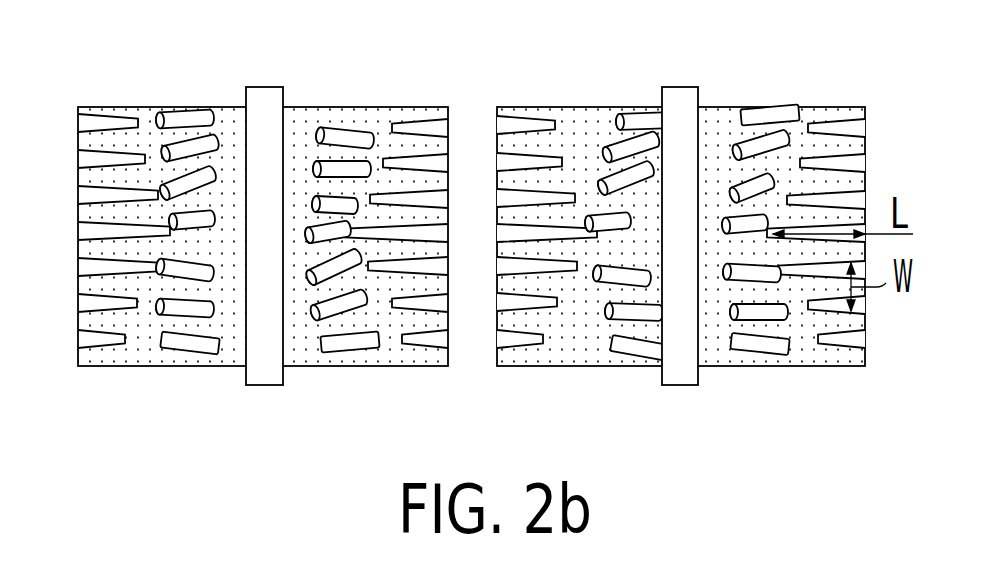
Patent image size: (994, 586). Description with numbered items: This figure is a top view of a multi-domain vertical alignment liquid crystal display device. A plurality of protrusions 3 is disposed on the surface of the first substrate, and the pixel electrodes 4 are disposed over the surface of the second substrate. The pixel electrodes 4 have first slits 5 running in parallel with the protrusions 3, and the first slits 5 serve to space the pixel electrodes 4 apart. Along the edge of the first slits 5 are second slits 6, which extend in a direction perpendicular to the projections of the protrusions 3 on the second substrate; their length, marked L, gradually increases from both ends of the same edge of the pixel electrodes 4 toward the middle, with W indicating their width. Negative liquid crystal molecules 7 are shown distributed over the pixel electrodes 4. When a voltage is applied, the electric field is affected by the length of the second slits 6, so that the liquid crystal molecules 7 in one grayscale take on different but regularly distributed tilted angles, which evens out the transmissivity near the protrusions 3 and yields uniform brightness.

The protrusion 3 is at (685, 106).
The pixel electrode 4 is at (590, 125).
The first slit 5 is at (477, 113).
The second slit 6 is at (513, 343).
The negative liquid crystal molecule 7 is at (336, 130).